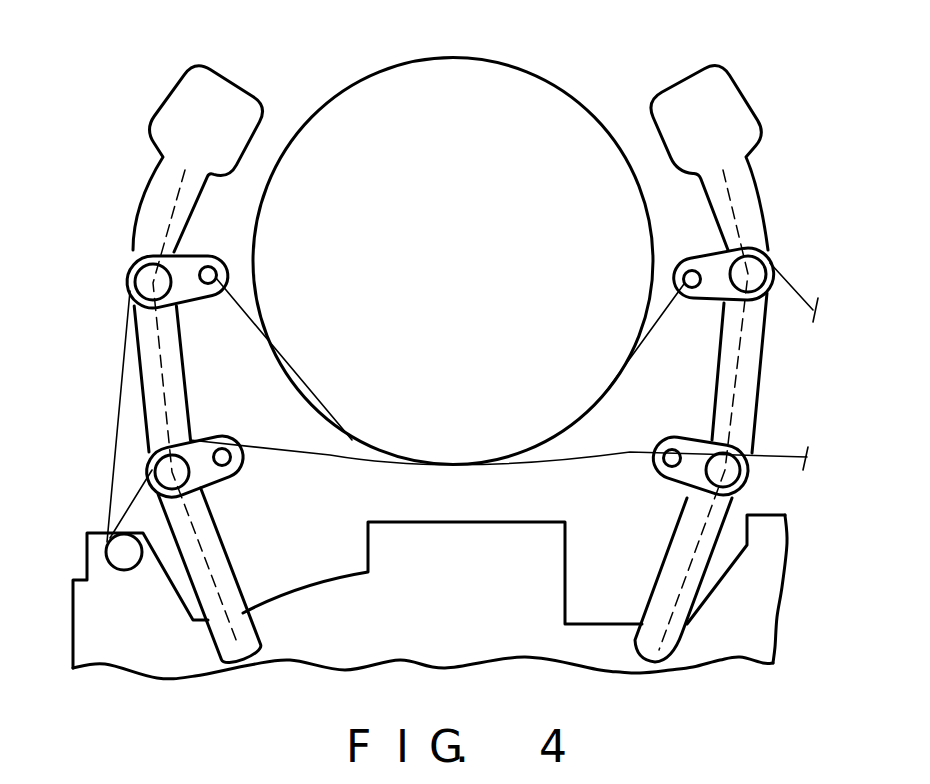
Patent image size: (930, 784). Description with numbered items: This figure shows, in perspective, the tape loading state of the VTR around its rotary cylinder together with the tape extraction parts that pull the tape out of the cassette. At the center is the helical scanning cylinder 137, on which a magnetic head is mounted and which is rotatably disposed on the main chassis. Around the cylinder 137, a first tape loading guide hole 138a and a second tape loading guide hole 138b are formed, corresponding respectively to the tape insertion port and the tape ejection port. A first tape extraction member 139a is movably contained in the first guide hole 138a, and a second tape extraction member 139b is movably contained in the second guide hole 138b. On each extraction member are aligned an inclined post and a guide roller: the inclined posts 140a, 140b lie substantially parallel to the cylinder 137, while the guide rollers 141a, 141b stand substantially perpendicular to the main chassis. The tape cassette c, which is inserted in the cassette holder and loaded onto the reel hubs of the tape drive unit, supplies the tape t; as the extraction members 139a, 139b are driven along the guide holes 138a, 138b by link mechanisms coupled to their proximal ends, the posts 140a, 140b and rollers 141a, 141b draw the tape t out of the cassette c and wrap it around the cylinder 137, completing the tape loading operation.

The helical scanning cylinder 137 is at (587, 110).
The first tape loading guide hole 138a is at (180, 378).
The second tape loading guide hole 138b is at (760, 385).
The first tape extraction member 139a is at (193, 490).
The second tape extraction member 139b is at (680, 487).
The inclined post 140a is at (238, 464).
The inclined post 140b is at (657, 467).
The guide roller 141a is at (150, 472).
The guide roller 141b is at (733, 478).
The magnetic tape t is at (603, 453).
The tape cassette c is at (73, 622).